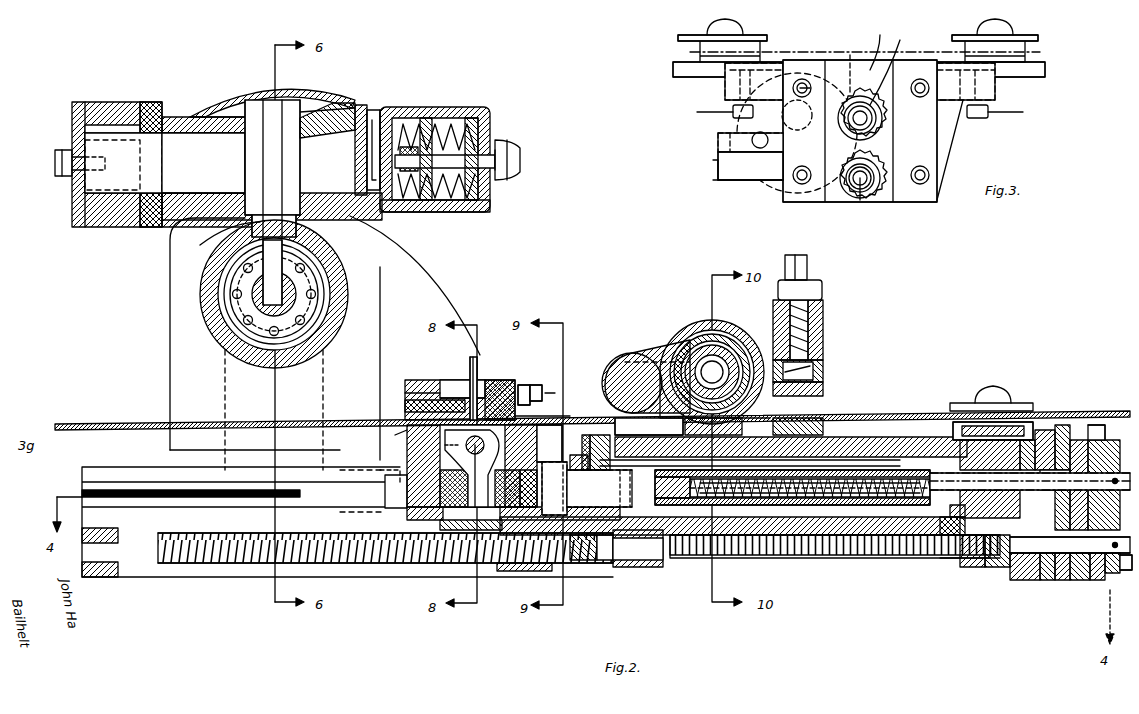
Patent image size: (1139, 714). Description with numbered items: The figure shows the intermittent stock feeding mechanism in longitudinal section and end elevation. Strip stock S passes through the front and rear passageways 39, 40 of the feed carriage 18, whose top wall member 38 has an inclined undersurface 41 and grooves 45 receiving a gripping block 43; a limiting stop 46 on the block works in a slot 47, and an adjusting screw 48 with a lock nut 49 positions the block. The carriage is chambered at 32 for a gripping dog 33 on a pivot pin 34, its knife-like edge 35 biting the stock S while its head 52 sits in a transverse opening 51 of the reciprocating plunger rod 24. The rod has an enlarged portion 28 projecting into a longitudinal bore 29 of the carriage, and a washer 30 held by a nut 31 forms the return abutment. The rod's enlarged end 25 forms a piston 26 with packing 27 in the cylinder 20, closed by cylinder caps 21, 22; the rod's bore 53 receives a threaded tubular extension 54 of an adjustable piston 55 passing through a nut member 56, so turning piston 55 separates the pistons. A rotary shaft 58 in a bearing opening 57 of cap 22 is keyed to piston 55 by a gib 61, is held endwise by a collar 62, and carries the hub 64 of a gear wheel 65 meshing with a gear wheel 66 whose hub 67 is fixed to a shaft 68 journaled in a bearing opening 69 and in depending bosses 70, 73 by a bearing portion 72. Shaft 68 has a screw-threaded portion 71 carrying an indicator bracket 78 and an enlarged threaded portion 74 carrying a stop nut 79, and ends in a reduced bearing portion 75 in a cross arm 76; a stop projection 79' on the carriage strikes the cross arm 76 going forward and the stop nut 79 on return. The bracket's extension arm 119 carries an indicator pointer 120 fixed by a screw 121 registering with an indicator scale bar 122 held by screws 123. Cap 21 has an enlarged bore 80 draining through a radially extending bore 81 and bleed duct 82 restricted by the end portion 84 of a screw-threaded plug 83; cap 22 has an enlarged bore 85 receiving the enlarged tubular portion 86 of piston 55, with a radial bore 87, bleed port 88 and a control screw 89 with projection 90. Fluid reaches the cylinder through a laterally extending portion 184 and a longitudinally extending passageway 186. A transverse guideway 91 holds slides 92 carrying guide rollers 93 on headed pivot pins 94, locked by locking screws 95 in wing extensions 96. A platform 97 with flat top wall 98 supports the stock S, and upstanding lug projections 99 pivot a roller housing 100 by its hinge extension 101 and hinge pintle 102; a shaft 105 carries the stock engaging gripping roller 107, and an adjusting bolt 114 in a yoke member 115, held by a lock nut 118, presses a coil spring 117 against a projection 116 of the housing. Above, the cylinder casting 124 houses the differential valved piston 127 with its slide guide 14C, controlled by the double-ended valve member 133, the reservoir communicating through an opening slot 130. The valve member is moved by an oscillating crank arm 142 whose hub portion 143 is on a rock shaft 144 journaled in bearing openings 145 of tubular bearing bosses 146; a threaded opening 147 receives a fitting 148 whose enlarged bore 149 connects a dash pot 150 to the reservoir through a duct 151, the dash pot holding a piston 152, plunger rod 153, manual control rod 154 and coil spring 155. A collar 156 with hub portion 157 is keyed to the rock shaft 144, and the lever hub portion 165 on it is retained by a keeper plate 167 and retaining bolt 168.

In FIG. 2, the strip stock S is at (145, 424).
In FIG. 3, the strip stock S is at (878, 44).
In FIG. 2, the hub portion 165 is at (98, 102).
In FIG. 2, the keeper plate 167 is at (88, 132).
In FIG. 2, the hub portion 157 is at (150, 102).
In FIG. 2, the retaining bolt 168 is at (70, 163).
In FIG. 2, the rock shaft 144 is at (165, 163).
In FIG. 2, the bearing openings 145 is at (181, 97).
In FIG. 2, the collar 156 is at (112, 228).
In FIG. 2, the tubular bearing bosses 146 is at (228, 100).
In FIG. 2, the hub portion 143 is at (258, 95).
In FIG. 2, the duct 151 is at (338, 132).
In FIG. 2, the threaded opening 147 is at (360, 105).
In FIG. 2, the fitting 148 is at (374, 112).
In FIG. 2, the dash pot structure 150 is at (458, 110).
In FIG. 2, the enlarged bore 149 is at (412, 122).
In FIG. 2, the plunger rod 153 is at (478, 150).
In FIG. 2, the manual control rod 154 is at (520, 160).
In FIG. 2, the piston 152 is at (390, 212).
In FIG. 2, the coil spring 155 is at (476, 212).
In FIG. 2, the cylinder casting 124 is at (325, 343).
In FIG. 2, the oscillating crank arm 142 is at (218, 242).
In FIG. 2, the differential valved piston 127 is at (230, 302).
In FIG. 2, the slide guide 14C is at (240, 312).
In FIG. 2, the double-ended valve member 133 is at (300, 280).
In FIG. 2, the opening slot 130 is at (300, 240).
In FIG. 2, the enlarged threaded portion 74 is at (400, 570).
In FIG. 2, the reduced bearing portion 75 is at (108, 530).
In FIG. 2, the cross arm 76 is at (102, 578).
In FIG. 2, the nut 31 is at (392, 494).
In FIG. 2, the longitudinal bore 29 is at (420, 518).
In FIG. 2, the washer 30 is at (407, 460).
In FIG. 2, the passageway 39 is at (400, 432).
In FIG. 2, the stop projection 79' is at (459, 555).
In FIG. 2, the stop nut 79 is at (516, 595).
In FIG. 2, the cylinder cap 21 is at (578, 522).
In FIG. 2, the enlarged bore 80 is at (596, 565).
In FIG. 2, the depending boss 73 is at (614, 565).
In FIG. 2, the bearing portion 72 is at (645, 570).
In FIG. 2, the knife-like edge 35 is at (440, 437).
In FIG. 2, the chamber 32 is at (441, 488).
In FIG. 2, the gripping dog 33 is at (512, 488).
In FIG. 2, the pivot pin 34 is at (472, 468).
In FIG. 2, the head 52 is at (475, 471).
In FIG. 2, the transverse opening 51 is at (507, 495).
In FIG. 2, the feed carriage 18 is at (522, 450).
In FIG. 2, the enlarged portion 28 is at (554, 488).
In FIG. 2, the end portion 84 is at (599, 488).
In FIG. 2, the radially extending bore 81 is at (575, 455).
In FIG. 2, the screw-threaded plug 83 is at (585, 435).
In FIG. 2, the bleed duct 82 is at (603, 435).
In FIG. 2, the laterally extending portion 184 is at (640, 462).
In FIG. 2, the gripping block 43 is at (434, 383).
In FIG. 2, the top wall member 38 is at (460, 380).
In FIG. 2, the inclined undersurface 41 is at (408, 392).
In FIG. 2, the grooves 45 is at (408, 406).
In FIG. 2, the limiting stop 46 is at (478, 358).
In FIG. 2, the slot 47 is at (495, 380).
In FIG. 2, the lock nut 49 is at (522, 385).
In FIG. 2, the adjusting screw 48 is at (537, 385).
In FIG. 2, the passageway 40 is at (535, 412).
In FIG. 2, the upstanding lug projections 99 is at (649, 426).
In FIG. 2, the platform 97 is at (733, 428).
In FIG. 2, the top wall 98 is at (735, 408).
In FIG. 2, the roller housing 100 is at (693, 318).
In FIG. 2, the stock engaging gripping roller 107 is at (680, 332).
In FIG. 2, the shaft 105 is at (718, 345).
In FIG. 2, the hinge pintle 102 is at (620, 370).
In FIG. 2, the hinge extension 101 is at (662, 350).
In FIG. 2, the adjusting bolt 114 is at (823, 313).
In FIG. 2, the yoke member 115 is at (823, 333).
In FIG. 2, the lock nut 118 is at (822, 288).
In FIG. 2, the coil spring 117 is at (823, 368).
In FIG. 2, the projection 116 is at (823, 388).
In FIG. 2, the reciprocating plunger rod 24 is at (775, 462).
In FIG. 2, the bore 53 is at (690, 505).
In FIG. 2, the threaded tubular extension 54 is at (848, 505).
In FIG. 2, the screw-threaded portion 71 is at (822, 497).
In FIG. 2, the cylinder 20 is at (880, 437).
In FIG. 2, the enlarged portion 25 is at (915, 540).
In FIG. 2, the nut member 56 is at (945, 535).
In FIG. 2, the piston 26 is at (957, 520).
In FIG. 2, the indicator bracket 78 is at (978, 568).
In FIG. 2, the gib or key 61 is at (998, 568).
In FIG. 2, the packing 27 is at (955, 430).
In FIG. 2, the guideway 91 is at (953, 405).
In FIG. 3, the guideway 91 is at (852, 55).
In FIG. 2, the bleed port 88 is at (1020, 445).
In FIG. 2, the adjustable piston 55 is at (1030, 440).
In FIG. 2, the control screw 89 is at (1048, 432).
In FIG. 2, the radial bore 87 is at (1066, 428).
In FIG. 2, the projection 90 is at (1075, 440).
In FIG. 2, the bearing opening 57 is at (1081, 485).
In FIG. 2, the hub 64 is at (1113, 465).
In FIG. 3, the hub 64 is at (878, 132).
In FIG. 2, the gear wheel 65 is at (1101, 429).
In FIG. 3, the gear wheel 65 is at (890, 65).
In FIG. 2, the rotary shaft 58 is at (1030, 481).
In FIG. 3, the rotary shaft 58 is at (885, 120).
In FIG. 2, the shaft 68 is at (1070, 545).
In FIG. 3, the shaft 68 is at (860, 200).
In FIG. 2, the depending boss 70 is at (1025, 555).
In FIG. 2, the enlarged tubular portion 86 is at (1047, 560).
In FIG. 2, the enlarged bore 85 is at (1062, 560).
In FIG. 2, the bearing opening 69 is at (1078, 557).
In FIG. 2, the collar 62 is at (1095, 560).
In FIG. 2, the gear wheel 66 is at (1110, 575).
In FIG. 3, the gear wheel 66 is at (872, 205).
In FIG. 2, the hub 67 is at (1124, 570).
In FIG. 3, the hub 67 is at (885, 200).
In FIG. 3, the slides 92 is at (692, 78).
In FIG. 3, the guide rollers 93 is at (700, 49).
In FIG. 3, the headed pivot pins or bolts 94 is at (730, 30).
In FIG. 3, the wing extensions 96 is at (728, 90).
In FIG. 3, the locking screws 95 is at (738, 118).
In FIG. 3, the cylinder cap 22 is at (870, 130).
In FIG. 3, the longitudinally extending passageway 186 is at (800, 195).
In FIG. 3, the indicator scale bar 122 is at (718, 142).
In FIG. 3, the screws 123 is at (752, 133).
In FIG. 3, the indicator pointer 120 is at (718, 156).
In FIG. 3, the screw 121 is at (713, 172).
In FIG. 3, the extension arm 119 is at (755, 180).